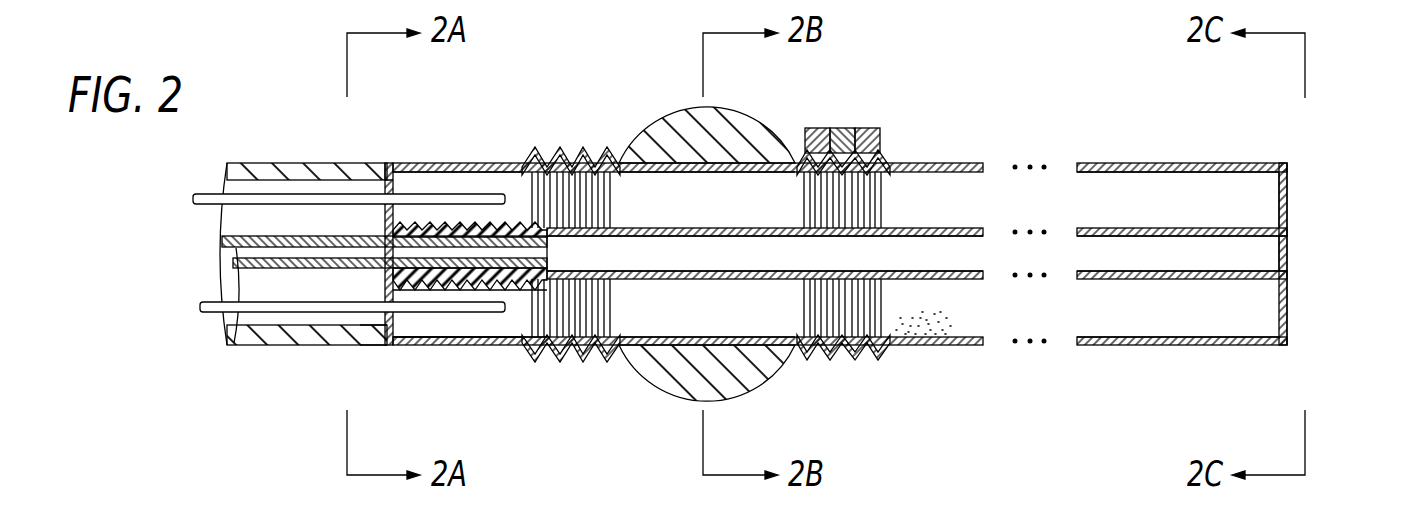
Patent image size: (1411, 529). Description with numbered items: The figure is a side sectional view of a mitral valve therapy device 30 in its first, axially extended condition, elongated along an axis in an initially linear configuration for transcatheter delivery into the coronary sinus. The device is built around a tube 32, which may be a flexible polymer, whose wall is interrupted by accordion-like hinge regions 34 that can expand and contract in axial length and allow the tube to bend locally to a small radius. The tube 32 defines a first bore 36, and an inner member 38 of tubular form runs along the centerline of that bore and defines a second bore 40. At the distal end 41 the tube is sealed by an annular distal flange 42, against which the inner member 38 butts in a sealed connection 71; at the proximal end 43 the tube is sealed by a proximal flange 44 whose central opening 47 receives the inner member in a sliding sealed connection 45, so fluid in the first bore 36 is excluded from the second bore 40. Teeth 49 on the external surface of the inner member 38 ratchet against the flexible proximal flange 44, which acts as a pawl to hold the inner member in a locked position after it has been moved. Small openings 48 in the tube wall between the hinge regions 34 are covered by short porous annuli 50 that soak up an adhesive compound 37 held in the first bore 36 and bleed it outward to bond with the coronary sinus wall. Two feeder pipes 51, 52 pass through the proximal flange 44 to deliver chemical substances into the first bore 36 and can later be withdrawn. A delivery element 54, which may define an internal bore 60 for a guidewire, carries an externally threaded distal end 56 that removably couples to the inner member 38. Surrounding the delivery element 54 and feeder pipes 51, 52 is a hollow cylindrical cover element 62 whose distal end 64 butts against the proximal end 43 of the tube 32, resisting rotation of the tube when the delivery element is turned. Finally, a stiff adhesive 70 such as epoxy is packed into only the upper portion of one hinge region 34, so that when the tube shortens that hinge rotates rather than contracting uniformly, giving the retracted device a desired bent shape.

The mitral valve therapy device 30 is at (968, 115).
The tube 32 is at (440, 163).
The hinge region 34 is at (583, 147).
The first bore 36 is at (418, 323).
The adhesive compound 37 is at (924, 327).
The inner member 38 is at (720, 228).
The second bore 40 is at (613, 255).
The distal end 41 is at (1320, 137).
The distal flange 42 is at (1287, 192).
The proximal end 43 is at (390, 140).
The proximal flange 44 is at (383, 293).
The sliding sealed connection 45 is at (1280, 253).
The opening 47 is at (388, 226).
The openings 48 is at (705, 170).
The teeth 49 is at (483, 226).
The porous annulus 50 is at (725, 107).
The feeder pipe 51 is at (295, 196).
The feeder pipe 52 is at (270, 313).
The delivery element 54 is at (252, 235).
The externally threaded distal end 56 is at (533, 247).
The internal bore 60 is at (312, 258).
The cover element 62 is at (342, 163).
The distal end of the cover element 64 is at (376, 335).
The stiff adhesive 70 is at (866, 132).
The sealed connection 71 is at (1279, 224).